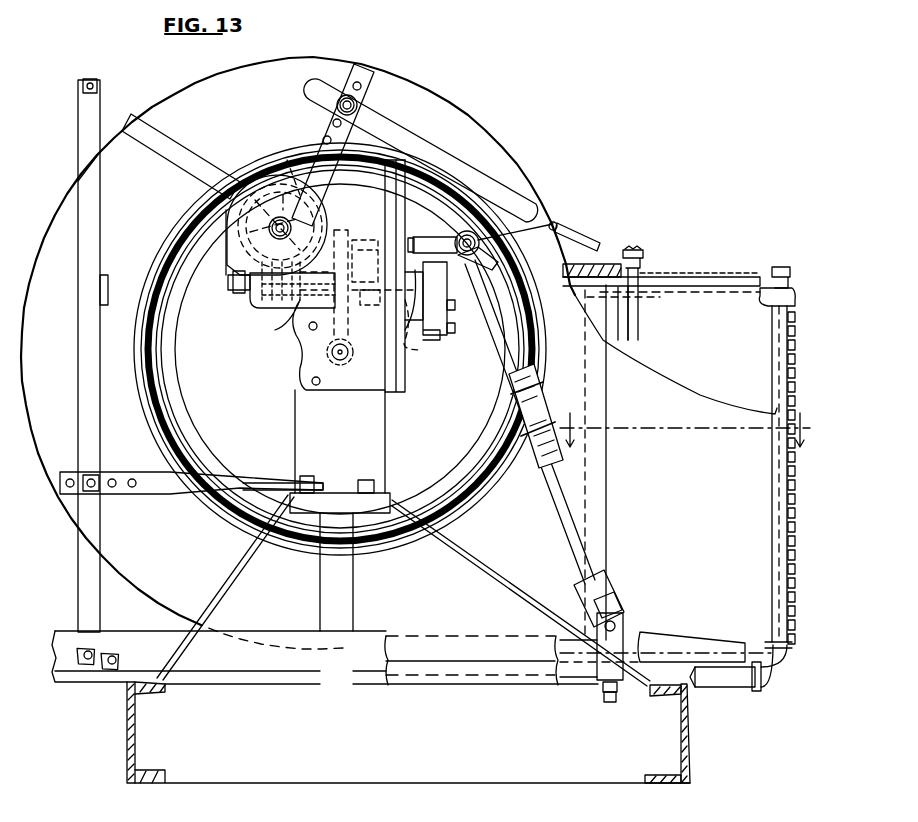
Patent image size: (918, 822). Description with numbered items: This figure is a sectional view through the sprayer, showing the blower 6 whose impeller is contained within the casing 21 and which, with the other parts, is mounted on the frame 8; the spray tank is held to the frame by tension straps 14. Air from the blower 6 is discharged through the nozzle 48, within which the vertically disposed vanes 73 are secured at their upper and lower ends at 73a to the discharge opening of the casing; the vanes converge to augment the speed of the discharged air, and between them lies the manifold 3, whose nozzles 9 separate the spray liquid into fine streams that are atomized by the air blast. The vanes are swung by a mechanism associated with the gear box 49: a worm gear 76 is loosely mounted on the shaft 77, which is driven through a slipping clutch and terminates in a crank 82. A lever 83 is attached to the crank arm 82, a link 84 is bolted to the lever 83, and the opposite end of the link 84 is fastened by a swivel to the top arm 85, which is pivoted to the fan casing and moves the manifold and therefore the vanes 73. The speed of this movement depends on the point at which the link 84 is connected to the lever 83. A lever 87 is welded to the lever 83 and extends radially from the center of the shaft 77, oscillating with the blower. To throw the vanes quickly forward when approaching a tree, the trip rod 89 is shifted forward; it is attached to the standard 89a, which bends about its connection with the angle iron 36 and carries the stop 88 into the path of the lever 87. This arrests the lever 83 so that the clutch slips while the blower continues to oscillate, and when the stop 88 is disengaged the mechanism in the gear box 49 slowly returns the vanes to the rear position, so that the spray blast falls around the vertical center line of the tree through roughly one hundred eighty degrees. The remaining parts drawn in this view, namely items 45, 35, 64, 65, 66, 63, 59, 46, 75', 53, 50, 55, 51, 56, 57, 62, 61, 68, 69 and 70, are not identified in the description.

The blower 6 is at (470, 129).
The wheel 45 is at (494, 514).
The stop 88 is at (100, 290).
The trip rod 89 is at (98, 86).
The standard 89a is at (86, 141).
The nozzle 48 is at (772, 264).
The pedestal 35 is at (328, 602).
The angle iron 36 is at (388, 642).
The frame 8 is at (688, 750).
The lever 87 is at (186, 158).
The worm gear 76 is at (268, 162).
The shaft 77 is at (290, 237).
The crank arm 82 is at (287, 152).
The lever 83 is at (365, 80).
The link 84 is at (520, 202).
The pivot hub 64 is at (461, 232).
The pivot pin 65 is at (556, 228).
The slide block 66 is at (484, 268).
The bar 63 is at (431, 237).
The vertical plate 59 is at (401, 393).
The bracket 46 is at (292, 344).
The housing box 75' is at (291, 300).
The bolt 53 is at (245, 298).
The gear box 49 is at (236, 247).
The pawl rod 50 is at (347, 230).
The pawl 55 is at (366, 240).
The roller 51 is at (350, 349).
The cam 56 is at (420, 322).
The slide 57 is at (435, 313).
The nut 62 is at (458, 309).
The nut 61 is at (456, 331).
The connecting rod 68 is at (512, 350).
The clevis 69 is at (608, 606).
The bracket 70 is at (619, 630).
The tension straps 14 is at (696, 430).
The vanes 73 is at (668, 306).
The vane connections 73a is at (574, 285).
The casing 21 is at (661, 272).
The top arm 85 is at (638, 248).
The nozzles 9 is at (797, 358).
The manifold 3 is at (772, 378).